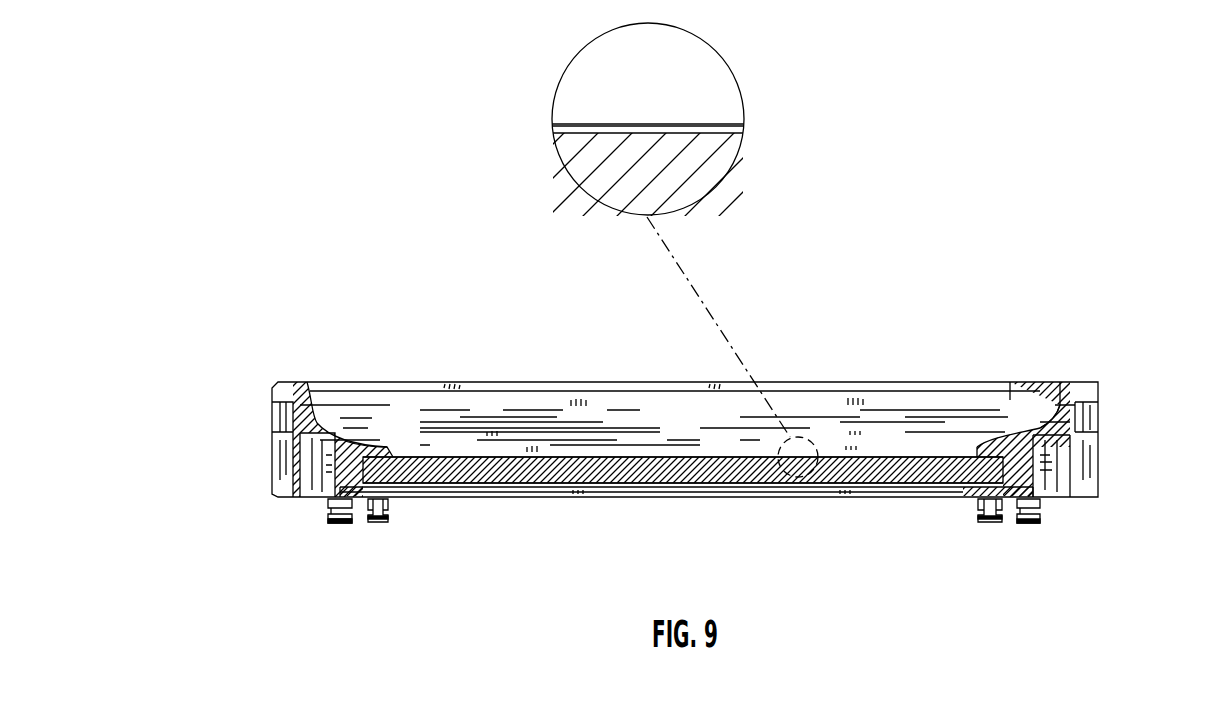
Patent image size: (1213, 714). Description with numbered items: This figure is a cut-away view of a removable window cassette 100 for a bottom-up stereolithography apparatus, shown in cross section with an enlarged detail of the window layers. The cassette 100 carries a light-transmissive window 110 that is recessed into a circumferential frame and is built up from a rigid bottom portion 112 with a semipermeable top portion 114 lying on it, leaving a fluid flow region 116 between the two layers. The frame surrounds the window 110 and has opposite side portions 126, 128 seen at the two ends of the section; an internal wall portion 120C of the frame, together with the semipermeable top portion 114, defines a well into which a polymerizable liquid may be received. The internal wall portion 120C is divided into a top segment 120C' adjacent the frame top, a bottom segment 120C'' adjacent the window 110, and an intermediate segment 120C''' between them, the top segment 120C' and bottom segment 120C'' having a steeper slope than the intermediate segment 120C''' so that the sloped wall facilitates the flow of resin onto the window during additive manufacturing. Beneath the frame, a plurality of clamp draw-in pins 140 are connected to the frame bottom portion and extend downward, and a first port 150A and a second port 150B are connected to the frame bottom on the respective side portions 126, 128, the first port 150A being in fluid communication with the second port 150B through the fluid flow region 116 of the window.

The removable window cassette 100 is at (848, 283).
The light-transmissive window 110 is at (650, 452).
The rigid bottom portion 112 is at (698, 173).
The semipermeable top portion 114 is at (693, 125).
The fluid flow region 116 is at (560, 130).
The internal wall portion 120C is at (994, 367).
The top segment 120C' is at (1034, 387).
The bottom segment 120C'' is at (404, 379).
The intermediate segment 120C''' is at (345, 374).
The side portion 126 is at (272, 397).
The side portion 128 is at (1097, 382).
The clamp draw-in pin 140 is at (338, 527).
The first port 150A is at (988, 525).
The second port 150B is at (385, 527).